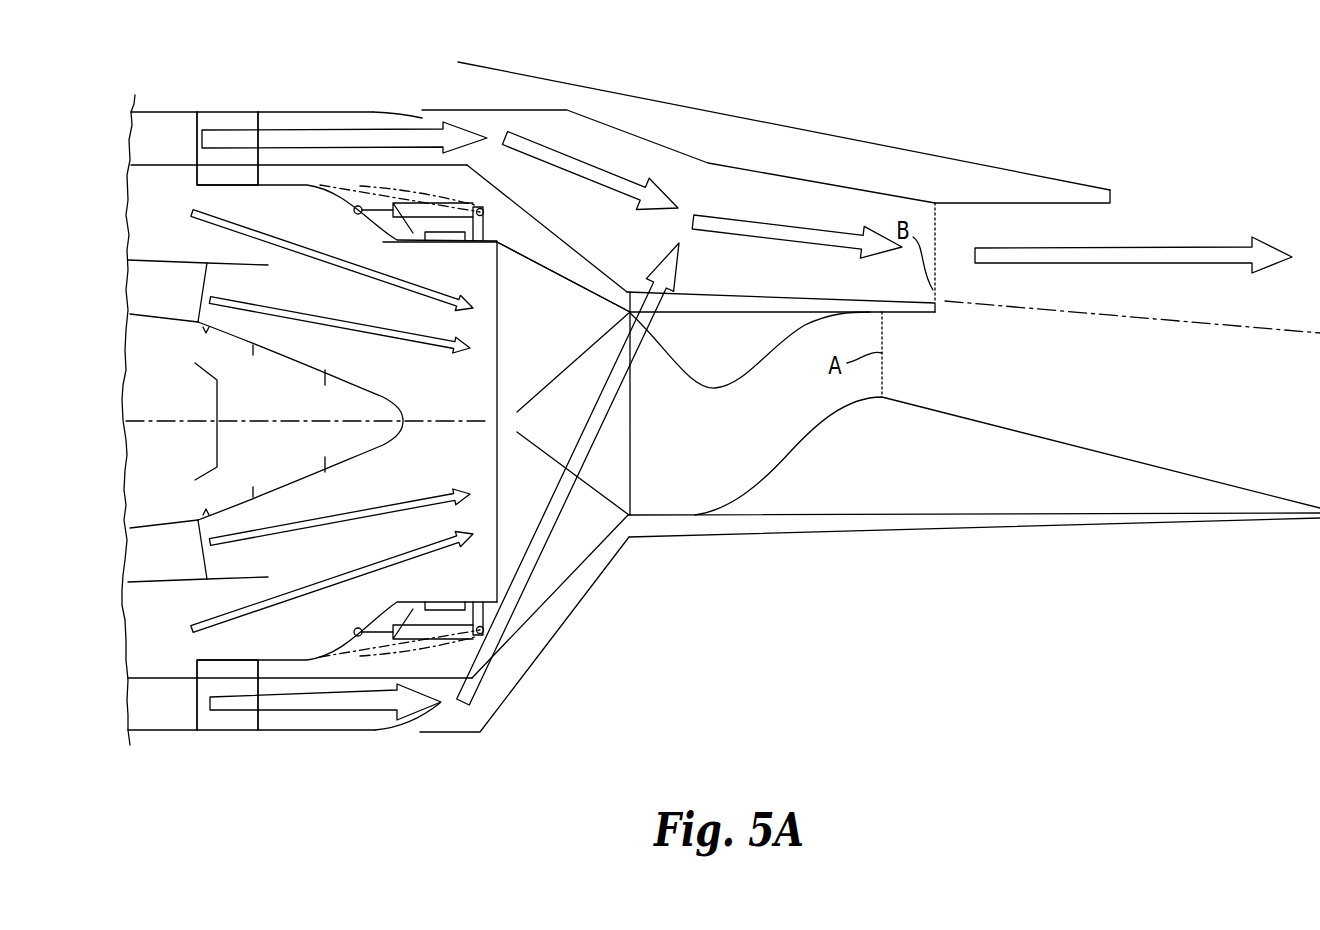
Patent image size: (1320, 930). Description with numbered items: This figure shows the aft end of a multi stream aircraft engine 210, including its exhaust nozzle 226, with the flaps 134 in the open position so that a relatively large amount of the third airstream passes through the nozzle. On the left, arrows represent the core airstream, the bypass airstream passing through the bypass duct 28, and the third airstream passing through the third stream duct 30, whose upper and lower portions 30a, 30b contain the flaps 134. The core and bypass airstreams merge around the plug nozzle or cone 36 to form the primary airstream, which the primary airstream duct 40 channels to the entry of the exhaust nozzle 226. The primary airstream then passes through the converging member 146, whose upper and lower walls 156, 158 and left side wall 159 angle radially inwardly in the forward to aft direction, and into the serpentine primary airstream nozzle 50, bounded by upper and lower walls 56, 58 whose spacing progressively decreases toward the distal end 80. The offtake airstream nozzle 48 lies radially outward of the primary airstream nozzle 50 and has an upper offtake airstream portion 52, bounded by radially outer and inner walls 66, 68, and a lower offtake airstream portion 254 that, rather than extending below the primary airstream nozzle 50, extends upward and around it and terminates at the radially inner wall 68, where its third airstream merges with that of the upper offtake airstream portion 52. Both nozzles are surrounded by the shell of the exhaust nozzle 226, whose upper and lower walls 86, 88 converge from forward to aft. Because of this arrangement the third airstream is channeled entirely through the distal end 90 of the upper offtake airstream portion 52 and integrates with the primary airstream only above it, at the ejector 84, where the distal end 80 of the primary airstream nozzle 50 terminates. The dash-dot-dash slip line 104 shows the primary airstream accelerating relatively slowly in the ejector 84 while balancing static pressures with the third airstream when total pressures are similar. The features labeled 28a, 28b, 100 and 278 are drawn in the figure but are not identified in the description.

The bypass duct 28 is at (241, 224).
The upper fan blade 28a is at (208, 197).
The lower fan blade 28b is at (230, 643).
The third stream duct 30 is at (318, 127).
The upper portion of the third stream duct 30a is at (278, 127).
The lower portion of the third stream duct 30b is at (293, 713).
The plug nozzle or cone 36 is at (347, 378).
The primary airstream duct 40 is at (350, 314).
The offtake airstream nozzle 48 is at (528, 207).
The primary airstream nozzle 50 is at (563, 426).
The upper offtake airstream portion 52 is at (558, 234).
The upper wall of the primary airstream nozzle 56 is at (745, 376).
The lower wall of the primary airstream nozzle 58 is at (808, 460).
The radially outer wall of the upper offtake airstream portion 66 is at (737, 168).
The radially inner wall of the upper offtake airstream portion 68 is at (763, 293).
The distal end of the primary airstream nozzle 80 is at (896, 352).
The ejector 84 is at (1193, 402).
The upper wall of the shell 86 is at (852, 137).
The lower wall of the shell 88 is at (845, 532).
The distal end of the upper offtake airstream portion 90 is at (959, 232).
The trailing edge 100 is at (938, 312).
The slip line 104 is at (1102, 325).
The third stream pressure/area flow control devices 134 is at (411, 105).
The converging member 146 is at (578, 268).
The upper wall of the converging member 156 is at (533, 262).
The lower wall of the converging member 158 is at (545, 566).
The left side wall of the converging member 159 is at (600, 357).
The multi stream aircraft engine 210 is at (850, 38).
The exhaust nozzle 226 is at (712, 100).
The lower offtake airstream portion 254 is at (496, 670).
The outer wall 278 is at (497, 706).